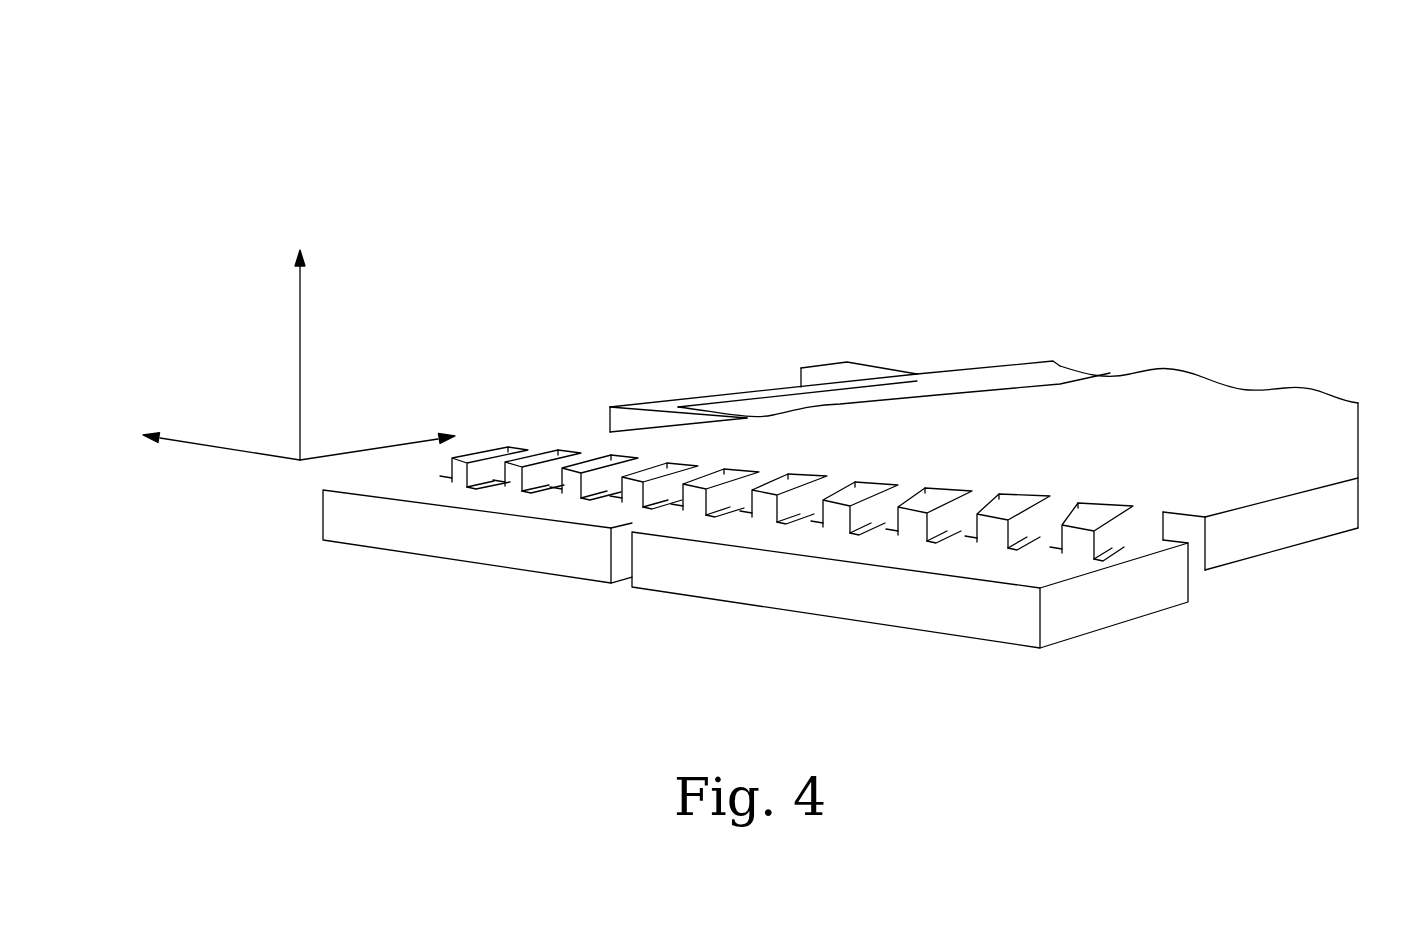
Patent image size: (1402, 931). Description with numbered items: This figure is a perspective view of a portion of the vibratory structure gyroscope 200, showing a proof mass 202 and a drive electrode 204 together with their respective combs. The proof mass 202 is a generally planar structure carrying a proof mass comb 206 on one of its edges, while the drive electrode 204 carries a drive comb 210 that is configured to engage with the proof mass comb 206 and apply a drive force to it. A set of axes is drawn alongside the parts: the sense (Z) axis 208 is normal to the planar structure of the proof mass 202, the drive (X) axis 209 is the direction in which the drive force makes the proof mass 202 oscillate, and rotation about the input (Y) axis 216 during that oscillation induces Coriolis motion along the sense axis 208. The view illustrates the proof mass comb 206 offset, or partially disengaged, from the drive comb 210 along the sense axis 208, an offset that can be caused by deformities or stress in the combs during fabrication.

The vibratory structure gyroscope 200 is at (1272, 161).
The proof mass 202 is at (960, 407).
The drive electrode 204 is at (773, 597).
The proof mass comb 206 is at (1025, 510).
The sense axis (Z) 208 is at (300, 334).
The drive (X) axis 209 is at (368, 449).
The drive comb 210 is at (1113, 560).
The input (Y) axis 216 is at (240, 451).